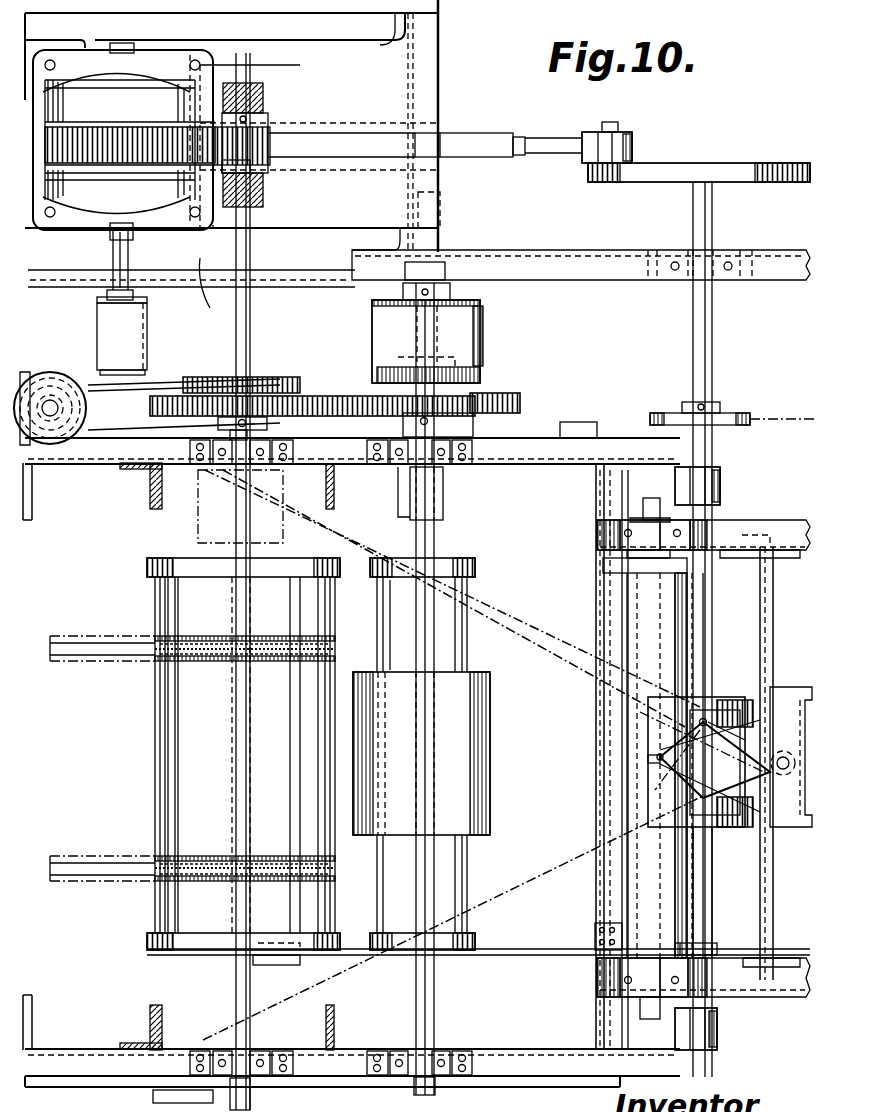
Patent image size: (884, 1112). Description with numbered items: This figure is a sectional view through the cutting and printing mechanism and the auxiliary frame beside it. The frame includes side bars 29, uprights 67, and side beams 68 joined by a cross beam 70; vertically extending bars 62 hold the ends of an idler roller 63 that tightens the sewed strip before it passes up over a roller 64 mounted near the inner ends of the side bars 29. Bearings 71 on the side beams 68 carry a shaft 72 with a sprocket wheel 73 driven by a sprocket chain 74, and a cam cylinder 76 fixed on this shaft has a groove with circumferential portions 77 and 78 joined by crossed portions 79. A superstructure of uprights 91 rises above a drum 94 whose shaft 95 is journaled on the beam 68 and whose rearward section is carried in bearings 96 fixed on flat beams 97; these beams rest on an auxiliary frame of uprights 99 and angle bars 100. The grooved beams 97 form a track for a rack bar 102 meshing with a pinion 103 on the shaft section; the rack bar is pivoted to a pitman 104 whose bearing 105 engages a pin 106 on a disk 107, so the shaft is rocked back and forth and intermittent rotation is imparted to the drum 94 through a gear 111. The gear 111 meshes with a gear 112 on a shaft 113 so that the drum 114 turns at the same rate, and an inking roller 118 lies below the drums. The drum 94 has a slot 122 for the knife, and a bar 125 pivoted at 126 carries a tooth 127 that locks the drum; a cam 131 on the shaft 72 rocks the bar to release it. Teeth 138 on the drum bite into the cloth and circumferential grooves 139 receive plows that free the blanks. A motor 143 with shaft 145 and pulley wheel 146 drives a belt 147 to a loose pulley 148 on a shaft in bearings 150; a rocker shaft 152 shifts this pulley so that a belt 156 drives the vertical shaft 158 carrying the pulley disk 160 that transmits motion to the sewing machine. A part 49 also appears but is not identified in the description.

The side bars 29 is at (735, 520).
The frame beam 49 is at (568, 250).
The vertically extending strips or bars 62 is at (742, 560).
The idler roller 63 is at (596, 475).
The roller 64 is at (673, 640).
The uprights 67 is at (32, 487).
The side beams 68 is at (351, 762).
The cross beam 70 is at (600, 590).
The bearings 71 is at (720, 480).
The shaft 72 is at (712, 374).
The sprocket wheel 73 is at (672, 412).
The sprocket chain 74 is at (768, 419).
The cam cylinder 76 is at (705, 828).
The groove portion 77 is at (735, 700).
The groove portion 78 is at (750, 820).
The crossed groove portions 79 is at (648, 758).
The uprights 91 is at (150, 490).
The drum 94 is at (175, 713).
The shaft 95 is at (251, 245).
The bearings 96 is at (263, 95).
The supporting bars or beams 97 is at (338, 64).
The uprights 99 is at (62, 42).
The angle bars 100 is at (245, 16).
The rack bar 102 is at (124, 135).
The pinion 103 is at (272, 143).
The pitman 104 is at (470, 134).
The bearing 105 is at (634, 143).
The pin 106 is at (612, 121).
The disk 107 is at (645, 173).
The gear 111 is at (322, 396).
The gear 112 is at (500, 393).
The shaft 113 is at (434, 543).
The drum 114 is at (490, 742).
The inking roller 118 is at (262, 377).
The slot or groove 122 is at (238, 750).
The bar 125 is at (518, 955).
The pivot 126 is at (595, 940).
The tooth 127 is at (262, 965).
The cam 131 is at (712, 943).
The teeth 138 is at (283, 682).
The grooves 139 is at (218, 682).
The motor 143 is at (140, 62).
The motor shaft 145 is at (113, 248).
The pulley wheel 146 is at (97, 298).
The belt 147 is at (199, 272).
The loose pulley 148 is at (480, 302).
The bearings 150 is at (443, 488).
The rocker shaft 152 is at (270, 280).
The belt 156 is at (148, 385).
The vertical shaft 158 is at (47, 400).
The pulley wheel or disk 160 is at (62, 375).